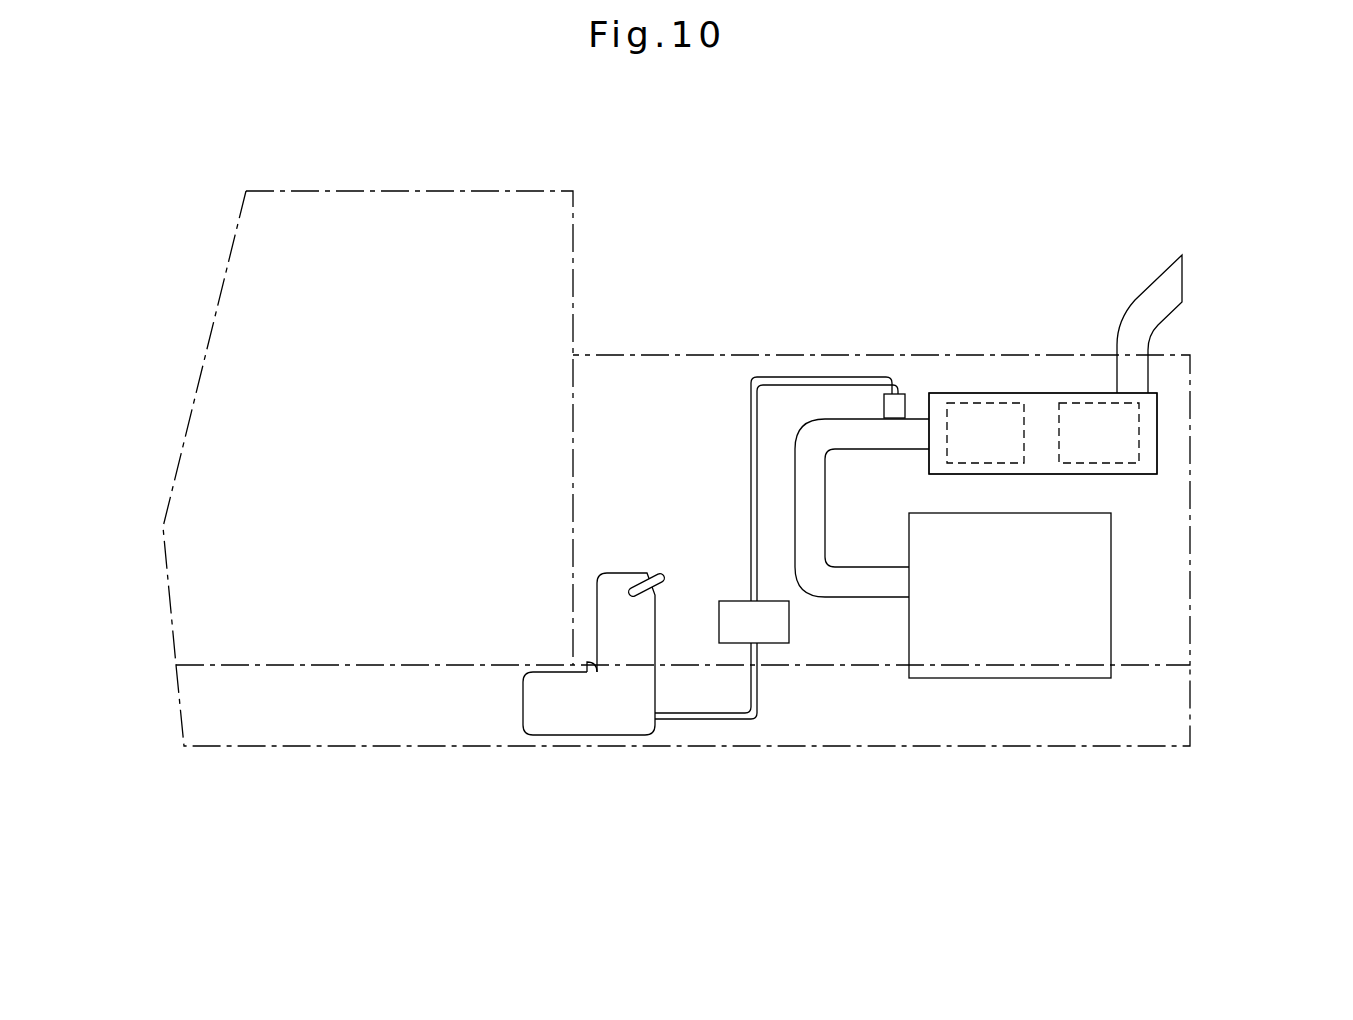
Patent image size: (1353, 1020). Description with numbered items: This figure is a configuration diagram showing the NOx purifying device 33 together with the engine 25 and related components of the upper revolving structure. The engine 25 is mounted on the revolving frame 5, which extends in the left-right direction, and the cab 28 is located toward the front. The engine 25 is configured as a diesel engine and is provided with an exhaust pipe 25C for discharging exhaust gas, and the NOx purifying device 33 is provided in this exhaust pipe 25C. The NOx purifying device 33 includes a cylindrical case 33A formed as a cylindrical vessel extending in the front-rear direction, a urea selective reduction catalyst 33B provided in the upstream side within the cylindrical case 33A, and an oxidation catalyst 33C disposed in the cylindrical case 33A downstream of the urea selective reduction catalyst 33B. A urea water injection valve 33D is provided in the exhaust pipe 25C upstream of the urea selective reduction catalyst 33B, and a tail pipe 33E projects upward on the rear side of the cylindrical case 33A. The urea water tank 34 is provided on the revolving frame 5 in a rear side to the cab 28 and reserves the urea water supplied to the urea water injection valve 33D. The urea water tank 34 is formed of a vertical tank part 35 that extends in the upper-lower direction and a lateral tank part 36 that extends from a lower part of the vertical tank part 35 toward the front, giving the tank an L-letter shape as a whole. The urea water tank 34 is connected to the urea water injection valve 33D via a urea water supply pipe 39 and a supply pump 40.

The revolving frame 5 is at (354, 748).
The cab 28 is at (373, 190).
The engine 25 is at (1085, 592).
The exhaust pipe 25C is at (810, 482).
The NOx purifying device 33 is at (1036, 392).
The cylindrical case 33A is at (1088, 392).
The urea selective reduction catalyst 33B is at (985, 420).
The oxidation catalyst 33C is at (1113, 432).
The urea water injection valve 33D is at (893, 410).
The tail pipe 33E is at (1170, 283).
The urea water tank 34 is at (620, 572).
The vertical tank part 35 is at (605, 622).
The lateral tank part 36 is at (563, 702).
The urea water supply pipe 39 is at (700, 719).
The supply pump 40 is at (760, 628).